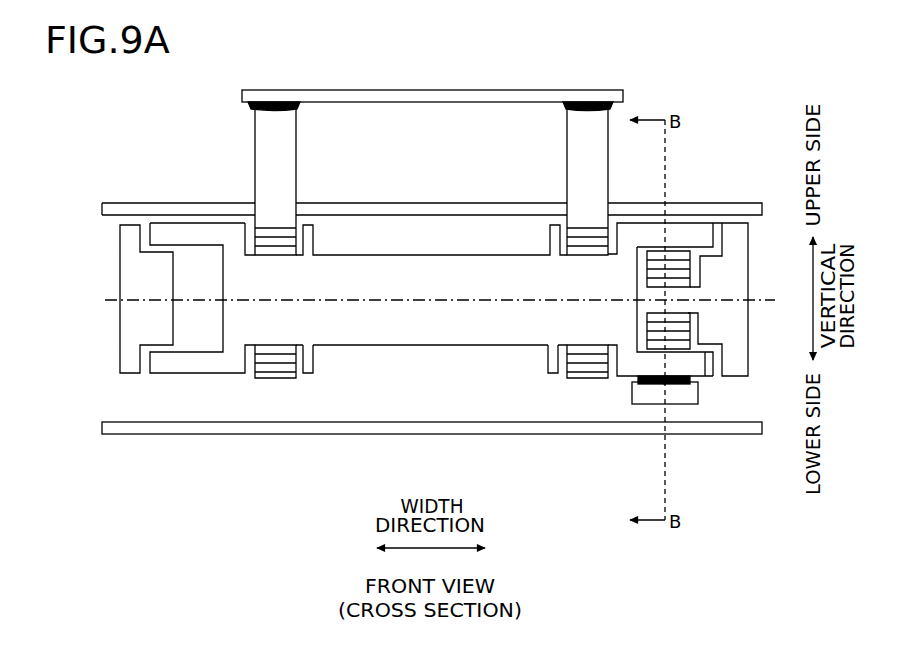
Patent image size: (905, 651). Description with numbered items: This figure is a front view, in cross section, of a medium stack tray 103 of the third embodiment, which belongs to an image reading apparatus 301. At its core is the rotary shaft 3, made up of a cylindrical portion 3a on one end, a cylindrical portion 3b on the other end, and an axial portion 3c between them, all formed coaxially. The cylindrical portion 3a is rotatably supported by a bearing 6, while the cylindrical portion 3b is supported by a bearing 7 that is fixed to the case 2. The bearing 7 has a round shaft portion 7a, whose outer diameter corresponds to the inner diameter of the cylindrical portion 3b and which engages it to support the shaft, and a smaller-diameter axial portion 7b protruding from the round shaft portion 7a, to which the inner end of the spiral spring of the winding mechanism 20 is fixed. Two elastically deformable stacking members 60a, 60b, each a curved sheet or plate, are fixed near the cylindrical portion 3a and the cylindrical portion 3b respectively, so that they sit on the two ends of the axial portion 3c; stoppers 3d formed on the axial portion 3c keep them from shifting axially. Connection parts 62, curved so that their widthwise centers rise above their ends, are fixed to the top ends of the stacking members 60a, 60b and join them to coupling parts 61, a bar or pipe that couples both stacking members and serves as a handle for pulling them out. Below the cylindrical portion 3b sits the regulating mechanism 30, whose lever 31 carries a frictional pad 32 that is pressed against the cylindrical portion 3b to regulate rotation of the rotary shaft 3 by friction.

The image reading apparatus 301 is at (156, 133).
The case 2 is at (122, 203).
The rotary shaft 3 is at (215, 222).
The cylindrical portion 3a is at (178, 223).
The cylindrical portion 3b is at (682, 237).
The axial portion 3c is at (338, 335).
The stoppers 3d is at (308, 375).
The bearing 6 is at (131, 373).
The bearing 7 is at (735, 378).
The round shaft portion 7a is at (706, 357).
The axial portion 7b is at (650, 290).
The winding mechanism 20 is at (718, 222).
The regulating mechanism 30 is at (687, 409).
The lever 31 is at (650, 386).
The frictional pad 32 is at (661, 386).
The stacking member 60a is at (262, 132).
The stacking member 60b is at (587, 123).
The coupling parts 61 is at (445, 90).
The connection parts 62 is at (300, 105).
The medium stack tray 103 is at (389, 80).